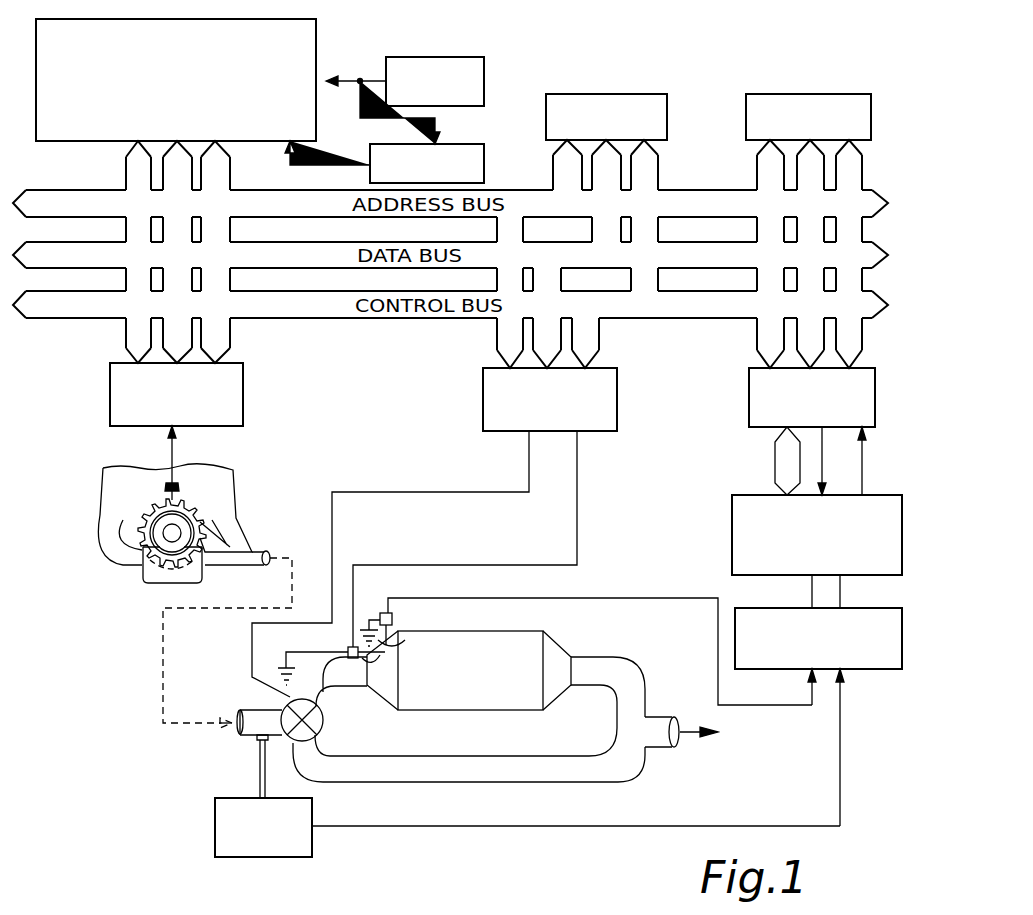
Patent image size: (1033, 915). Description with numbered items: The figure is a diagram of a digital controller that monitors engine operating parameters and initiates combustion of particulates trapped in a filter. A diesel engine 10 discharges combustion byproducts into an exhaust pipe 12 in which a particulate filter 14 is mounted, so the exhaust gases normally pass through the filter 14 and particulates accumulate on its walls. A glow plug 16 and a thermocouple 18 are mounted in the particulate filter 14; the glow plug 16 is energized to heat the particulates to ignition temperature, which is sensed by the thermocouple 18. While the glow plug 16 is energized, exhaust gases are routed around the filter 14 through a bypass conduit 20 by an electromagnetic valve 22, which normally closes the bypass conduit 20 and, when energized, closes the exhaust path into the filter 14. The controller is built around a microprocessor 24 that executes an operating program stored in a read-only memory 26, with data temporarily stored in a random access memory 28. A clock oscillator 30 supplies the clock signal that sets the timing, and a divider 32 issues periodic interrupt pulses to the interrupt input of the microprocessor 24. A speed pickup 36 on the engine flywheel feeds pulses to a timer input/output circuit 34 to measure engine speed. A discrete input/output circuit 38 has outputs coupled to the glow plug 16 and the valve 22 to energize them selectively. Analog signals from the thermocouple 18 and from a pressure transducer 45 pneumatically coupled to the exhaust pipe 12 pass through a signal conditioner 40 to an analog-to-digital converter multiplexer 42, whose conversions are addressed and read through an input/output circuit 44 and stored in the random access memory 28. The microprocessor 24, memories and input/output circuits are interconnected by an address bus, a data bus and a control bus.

The diesel engine 10 is at (213, 487).
The exhaust pipe 12 is at (253, 552).
The particulate filter 14 is at (520, 648).
The glow plug 16 is at (365, 665).
The thermocouple 18 is at (393, 640).
The bypass conduit 20 is at (463, 763).
The electromagnetic valve 22 is at (318, 722).
The microprocessor 24 is at (305, 53).
The read-only memory (ROM) 26 is at (647, 108).
The random access memory (RAM) 28 is at (841, 106).
The clock oscillator 30 is at (477, 68).
The divider 32 is at (475, 155).
The timer input/output circuit 34 is at (232, 392).
The speed pickup 36 is at (180, 478).
The discrete input/output circuit 38 is at (605, 413).
The signal conditioner 40 is at (858, 672).
The analog-to-digital converter multiplexer 42 is at (732, 522).
The input/output circuit 44 is at (755, 407).
The pressure transducer 45 is at (215, 825).